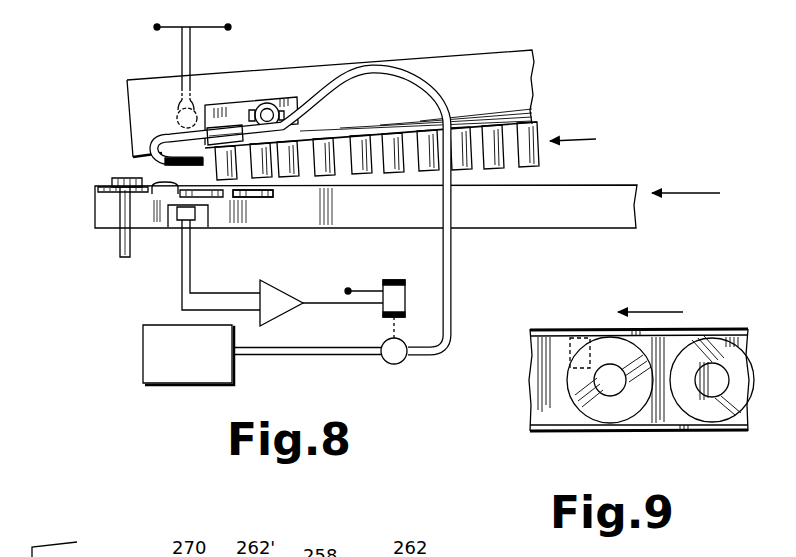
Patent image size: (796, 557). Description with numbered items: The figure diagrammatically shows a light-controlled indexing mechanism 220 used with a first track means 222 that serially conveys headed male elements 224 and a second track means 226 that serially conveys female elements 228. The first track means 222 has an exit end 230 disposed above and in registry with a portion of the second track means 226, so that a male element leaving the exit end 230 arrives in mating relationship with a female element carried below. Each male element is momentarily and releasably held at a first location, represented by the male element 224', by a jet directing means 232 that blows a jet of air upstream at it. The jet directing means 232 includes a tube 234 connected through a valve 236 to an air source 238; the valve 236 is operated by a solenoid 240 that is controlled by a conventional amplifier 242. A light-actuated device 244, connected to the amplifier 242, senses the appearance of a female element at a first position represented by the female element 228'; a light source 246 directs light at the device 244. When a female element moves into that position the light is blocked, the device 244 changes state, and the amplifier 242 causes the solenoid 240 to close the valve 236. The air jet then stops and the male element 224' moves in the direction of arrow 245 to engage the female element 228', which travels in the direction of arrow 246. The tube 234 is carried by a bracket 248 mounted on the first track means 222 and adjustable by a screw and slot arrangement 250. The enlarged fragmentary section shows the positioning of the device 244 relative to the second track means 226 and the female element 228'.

In FIG. 8, the indexing mechanism 220 is at (253, 80).
In FIG. 8, the first track means 222 is at (513, 57).
In FIG. 8, the headed male elements 224 is at (409, 174).
In FIG. 8, the male element at first location 224' is at (262, 224).
In FIG. 8, the second track means 226 is at (488, 217).
In FIG. 9, the second track means 226 is at (650, 427).
In FIG. 8, the female elements 228 is at (191, 219).
In FIG. 8, the female element at first position 228' is at (136, 231).
In FIG. 9, the female element at first position 228' is at (651, 400).
In FIG. 8, the exit end 230 is at (135, 100).
In FIG. 8, the jet directing means 232 is at (225, 116).
In FIG. 8, the tube 234 is at (183, 163).
In FIG. 8, the valve 236 is at (399, 365).
In FIG. 8, the air source 238 is at (188, 376).
In FIG. 8, the solenoid 240 is at (393, 302).
In FIG. 8, the amplifier 242 is at (273, 295).
In FIG. 8, the light-actuated device 244 is at (202, 238).
In FIG. 9, the light-actuated device 244 is at (558, 328).
In FIG. 8, the arrow 245 is at (583, 140).
In FIG. 8, the light source 246 is at (177, 122).
In FIG. 9, the light source 246 is at (652, 312).
In FIG. 8, the bracket 248 is at (247, 103).
In FIG. 8, the screw and slot arrangement 250 is at (294, 97).